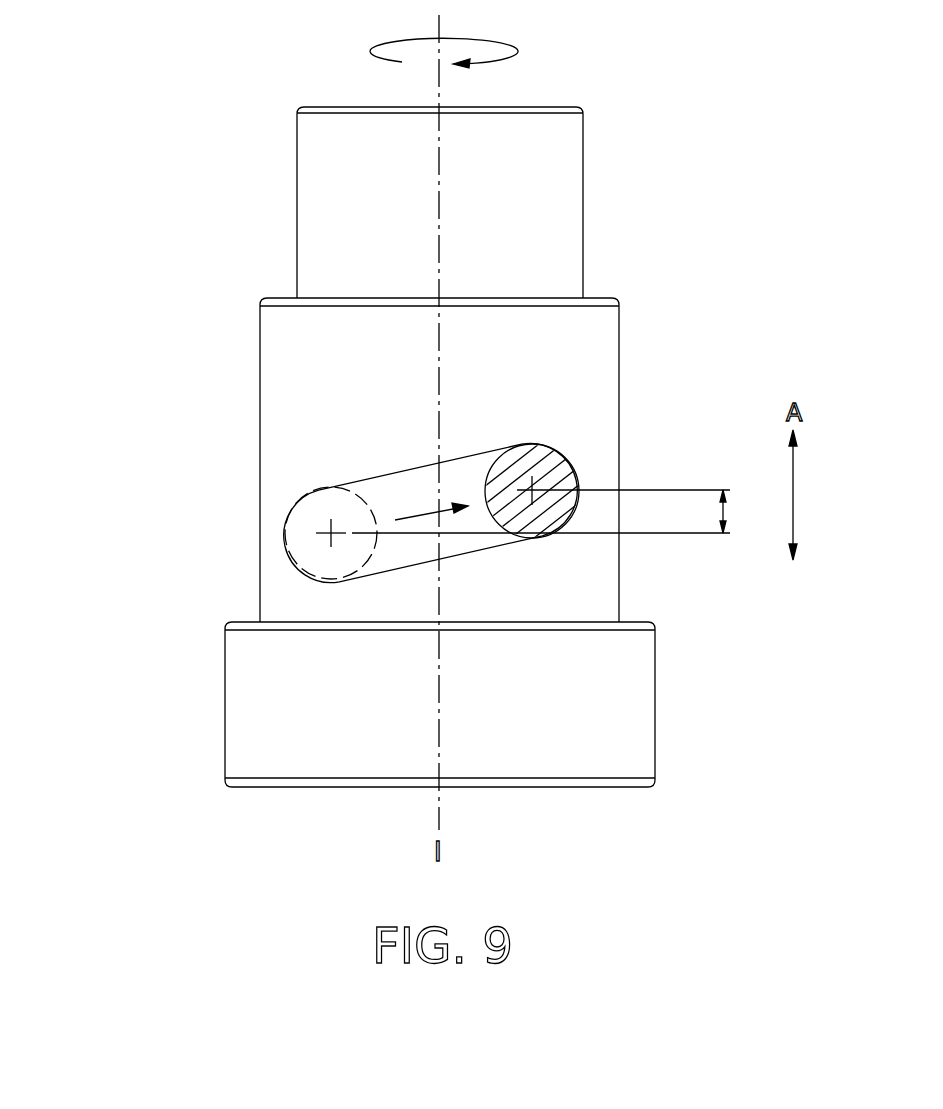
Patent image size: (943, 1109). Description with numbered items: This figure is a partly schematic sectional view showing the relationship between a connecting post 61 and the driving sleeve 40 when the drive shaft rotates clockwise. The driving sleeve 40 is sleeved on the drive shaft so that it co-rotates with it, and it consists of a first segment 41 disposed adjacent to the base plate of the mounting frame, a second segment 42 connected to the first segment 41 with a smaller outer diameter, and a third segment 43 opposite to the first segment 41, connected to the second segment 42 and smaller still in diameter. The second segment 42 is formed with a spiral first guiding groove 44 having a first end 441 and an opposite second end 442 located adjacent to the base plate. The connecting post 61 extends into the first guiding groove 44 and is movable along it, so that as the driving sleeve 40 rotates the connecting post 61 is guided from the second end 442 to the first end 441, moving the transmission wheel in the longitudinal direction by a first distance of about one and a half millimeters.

The driving sleeve 40 is at (213, 738).
The first segment 41 is at (224, 683).
The second segment 42 is at (260, 466).
The third segment 43 is at (296, 207).
The first guiding groove 44 is at (409, 472).
The first end 441 is at (578, 480).
The second end 442 is at (285, 568).
The connecting post 61 is at (540, 457).